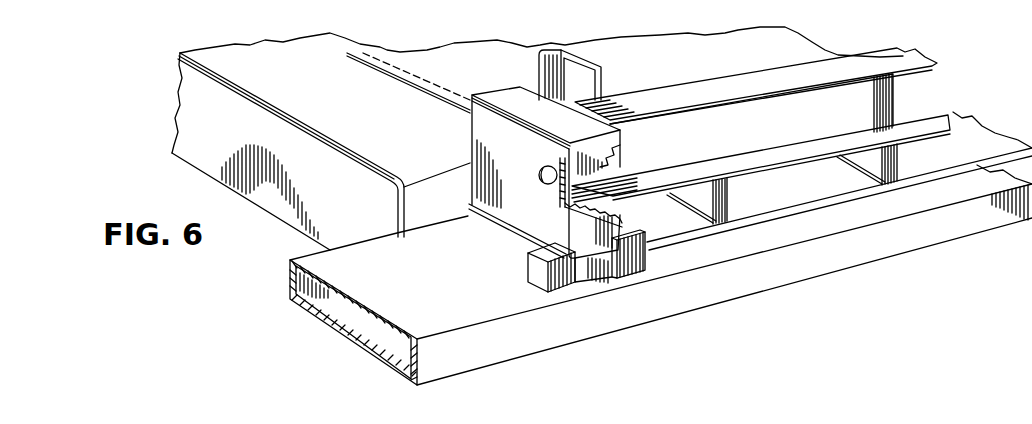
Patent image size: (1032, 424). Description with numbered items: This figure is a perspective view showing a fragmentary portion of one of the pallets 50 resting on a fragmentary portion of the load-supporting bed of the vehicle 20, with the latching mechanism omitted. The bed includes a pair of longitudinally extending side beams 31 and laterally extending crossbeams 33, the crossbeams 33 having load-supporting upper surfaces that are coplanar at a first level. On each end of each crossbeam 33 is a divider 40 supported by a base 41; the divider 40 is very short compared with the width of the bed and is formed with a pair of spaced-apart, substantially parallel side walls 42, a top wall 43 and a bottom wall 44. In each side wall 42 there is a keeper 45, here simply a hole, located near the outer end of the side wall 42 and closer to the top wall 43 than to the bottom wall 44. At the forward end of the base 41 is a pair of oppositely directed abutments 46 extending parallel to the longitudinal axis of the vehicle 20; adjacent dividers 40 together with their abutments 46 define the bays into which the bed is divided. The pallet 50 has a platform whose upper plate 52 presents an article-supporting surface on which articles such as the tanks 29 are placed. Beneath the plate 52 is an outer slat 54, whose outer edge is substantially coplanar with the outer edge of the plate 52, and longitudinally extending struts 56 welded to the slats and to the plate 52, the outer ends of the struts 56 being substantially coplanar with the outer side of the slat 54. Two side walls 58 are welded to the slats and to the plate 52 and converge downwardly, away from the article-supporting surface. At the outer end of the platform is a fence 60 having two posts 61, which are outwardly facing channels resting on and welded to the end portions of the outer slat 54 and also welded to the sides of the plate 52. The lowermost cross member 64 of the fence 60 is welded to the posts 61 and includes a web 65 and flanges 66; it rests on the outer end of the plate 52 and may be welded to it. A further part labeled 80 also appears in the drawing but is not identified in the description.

The vehicle 20 is at (112, 12).
The tanks 29 is at (213, 8).
The side beams 31 is at (886, 245).
The crossbeams 33 is at (193, 152).
The divider 40 is at (438, 171).
The base 41 is at (600, 272).
The side walls 42 is at (526, 219).
The top wall 43 is at (514, 97).
The bottom wall 44 is at (582, 246).
The keeper 45 is at (541, 165).
The abutments 46 is at (556, 290).
The pallet 50 is at (856, 0).
The upper plate 52 is at (775, 123).
The outer slat 54 is at (970, 147).
The struts 56 is at (862, 168).
The side walls 58 is at (698, 208).
The fence 60 is at (918, 53).
The posts 61 is at (574, 62).
The cross member 64 is at (815, 66).
The web 65 is at (877, 90).
The flanges 66 is at (888, 128).
The drawer front bracket 80 is at (147, 2).